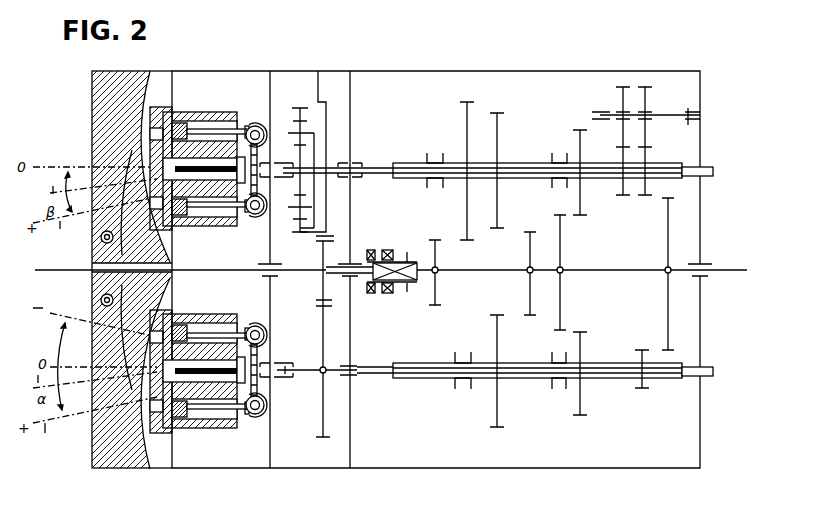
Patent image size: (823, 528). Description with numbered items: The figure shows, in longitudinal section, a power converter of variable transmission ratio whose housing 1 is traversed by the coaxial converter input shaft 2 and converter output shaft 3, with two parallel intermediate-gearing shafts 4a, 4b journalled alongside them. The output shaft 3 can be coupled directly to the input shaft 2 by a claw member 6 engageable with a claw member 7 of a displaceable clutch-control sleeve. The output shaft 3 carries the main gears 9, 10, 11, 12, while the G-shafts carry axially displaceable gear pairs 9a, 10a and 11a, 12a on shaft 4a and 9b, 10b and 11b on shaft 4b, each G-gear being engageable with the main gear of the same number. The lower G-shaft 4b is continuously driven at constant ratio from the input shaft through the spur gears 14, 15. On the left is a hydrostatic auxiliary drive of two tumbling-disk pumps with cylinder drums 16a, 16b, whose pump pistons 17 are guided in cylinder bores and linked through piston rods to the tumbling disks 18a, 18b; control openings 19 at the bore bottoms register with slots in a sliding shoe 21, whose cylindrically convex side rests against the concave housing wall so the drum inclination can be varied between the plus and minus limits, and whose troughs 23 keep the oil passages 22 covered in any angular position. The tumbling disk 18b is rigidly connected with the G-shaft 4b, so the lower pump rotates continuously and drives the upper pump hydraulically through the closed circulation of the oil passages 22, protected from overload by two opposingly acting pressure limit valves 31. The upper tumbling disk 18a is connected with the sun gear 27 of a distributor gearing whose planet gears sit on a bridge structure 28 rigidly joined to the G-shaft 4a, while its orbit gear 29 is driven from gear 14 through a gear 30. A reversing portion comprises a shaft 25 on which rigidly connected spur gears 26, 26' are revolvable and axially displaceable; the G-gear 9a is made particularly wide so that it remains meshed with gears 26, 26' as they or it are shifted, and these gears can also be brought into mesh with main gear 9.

The housing 1 is at (163, 71).
The converter input shaft 2 is at (59, 270).
The converter output shaft 3 is at (736, 276).
The intermediate-gearing shaft 4a is at (377, 173).
The intermediate-gearing shaft 4b is at (370, 374).
The claw member 6 is at (388, 250).
The claw member 7 is at (380, 292).
The main gear 9 is at (668, 298).
The G-gear 9a is at (648, 157).
The G-gear 9b is at (642, 389).
The main gear 10 is at (560, 298).
The G-gear 10a is at (577, 130).
The G-gear 10b is at (578, 416).
The main gear 11 is at (530, 267).
The G-gear 11a is at (492, 113).
The G-gear 11b is at (495, 427).
The main gear 12 is at (440, 257).
The G-gear 12a is at (463, 102).
The gear 14 is at (322, 291).
The gear 15 is at (322, 438).
The cylinder drum 16a is at (198, 112).
The cylinder drum 16b is at (175, 417).
The pump piston 17 is at (222, 130).
The tumbling disk 18a is at (254, 124).
The tumbling disk 18b is at (263, 385).
The control opening 19 is at (165, 128).
The sliding shoe 21 is at (168, 108).
The oil passage 22 is at (121, 168).
The trough 23 is at (141, 141).
The shaft 25 is at (664, 113).
The spur gear 26 is at (624, 99).
The spur gear 26' is at (653, 99).
The sun gear 27 is at (300, 157).
The bridge structure 28 is at (315, 140).
The orbit gear 29 is at (296, 108).
The gear 30 is at (320, 72).
The pressure limit valve 31 is at (100, 239).